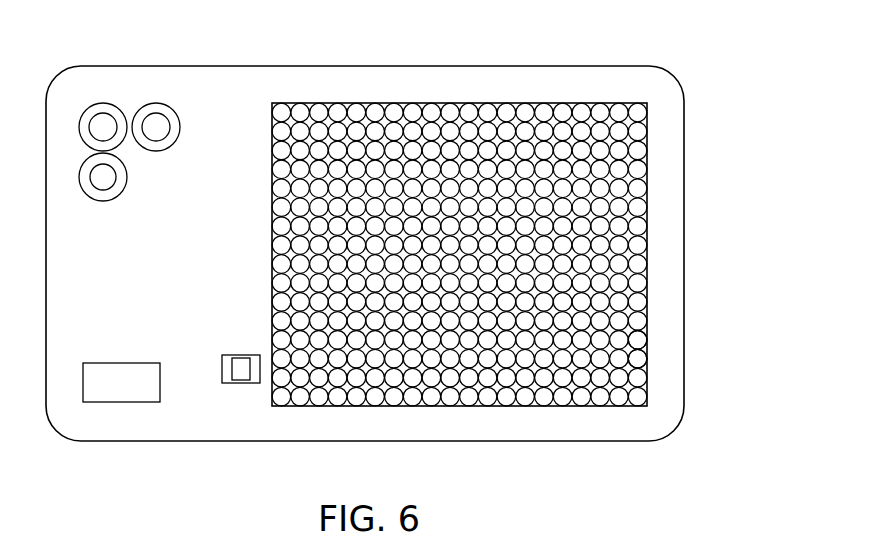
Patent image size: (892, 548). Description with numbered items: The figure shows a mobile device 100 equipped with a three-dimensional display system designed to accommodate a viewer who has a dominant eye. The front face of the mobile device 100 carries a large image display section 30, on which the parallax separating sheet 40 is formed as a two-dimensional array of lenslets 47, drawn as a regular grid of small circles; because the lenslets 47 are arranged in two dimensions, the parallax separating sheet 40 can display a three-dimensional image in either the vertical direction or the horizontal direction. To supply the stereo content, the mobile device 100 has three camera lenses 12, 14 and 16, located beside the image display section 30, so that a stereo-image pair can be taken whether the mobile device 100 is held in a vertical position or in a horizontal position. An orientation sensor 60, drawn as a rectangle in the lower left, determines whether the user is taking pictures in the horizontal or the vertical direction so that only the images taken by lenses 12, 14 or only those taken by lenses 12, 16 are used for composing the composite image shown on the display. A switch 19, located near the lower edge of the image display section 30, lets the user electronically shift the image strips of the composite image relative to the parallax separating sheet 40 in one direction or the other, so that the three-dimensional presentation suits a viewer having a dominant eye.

The mobile device 100 is at (630, 54).
The camera lens 12 is at (108, 112).
The camera lens 14 is at (165, 145).
The camera lens 16 is at (115, 187).
The switch 19 is at (238, 353).
The image display section 30 is at (273, 290).
The parallax separating sheet 40 is at (643, 273).
The lenslet 47 is at (637, 339).
The orientation sensor 60 is at (122, 373).